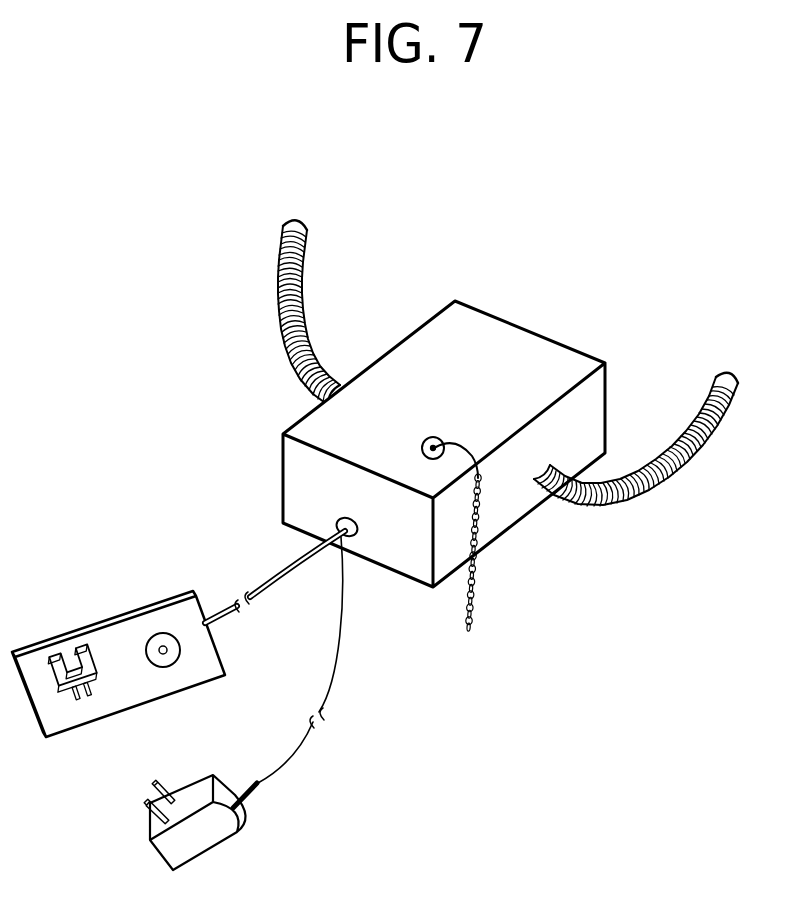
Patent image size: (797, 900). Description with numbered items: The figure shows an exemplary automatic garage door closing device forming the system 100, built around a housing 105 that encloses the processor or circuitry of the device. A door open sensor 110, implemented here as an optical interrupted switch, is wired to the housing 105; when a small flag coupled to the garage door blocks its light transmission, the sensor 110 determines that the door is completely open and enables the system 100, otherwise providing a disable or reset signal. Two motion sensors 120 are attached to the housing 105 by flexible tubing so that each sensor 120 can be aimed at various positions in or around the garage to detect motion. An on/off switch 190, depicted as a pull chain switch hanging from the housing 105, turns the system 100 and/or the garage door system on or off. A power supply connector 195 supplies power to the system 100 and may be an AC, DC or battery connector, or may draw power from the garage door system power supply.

The automatic garage door closing system 100 is at (634, 641).
The housing 105 is at (530, 331).
The door open sensor 110 is at (122, 612).
The motion sensor 120 is at (295, 222).
The on/off switch 190 is at (481, 550).
The power supply connector 195 is at (232, 845).